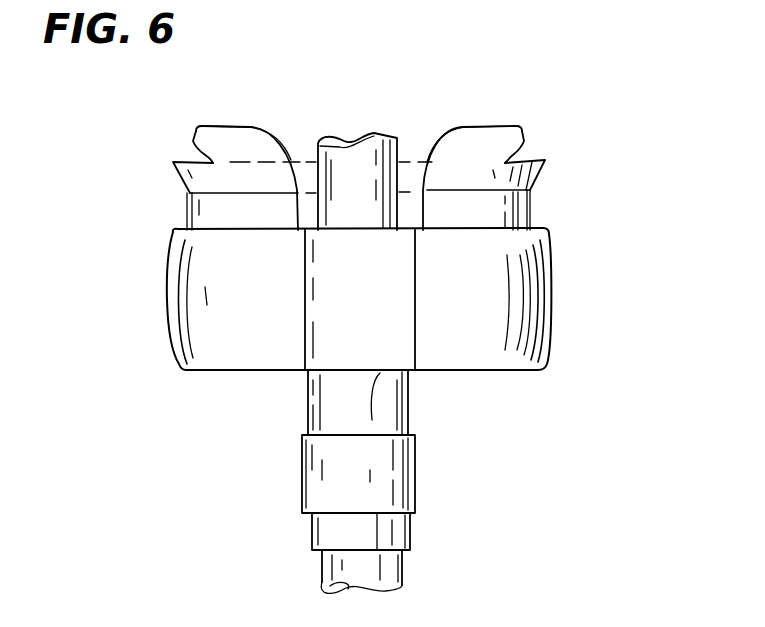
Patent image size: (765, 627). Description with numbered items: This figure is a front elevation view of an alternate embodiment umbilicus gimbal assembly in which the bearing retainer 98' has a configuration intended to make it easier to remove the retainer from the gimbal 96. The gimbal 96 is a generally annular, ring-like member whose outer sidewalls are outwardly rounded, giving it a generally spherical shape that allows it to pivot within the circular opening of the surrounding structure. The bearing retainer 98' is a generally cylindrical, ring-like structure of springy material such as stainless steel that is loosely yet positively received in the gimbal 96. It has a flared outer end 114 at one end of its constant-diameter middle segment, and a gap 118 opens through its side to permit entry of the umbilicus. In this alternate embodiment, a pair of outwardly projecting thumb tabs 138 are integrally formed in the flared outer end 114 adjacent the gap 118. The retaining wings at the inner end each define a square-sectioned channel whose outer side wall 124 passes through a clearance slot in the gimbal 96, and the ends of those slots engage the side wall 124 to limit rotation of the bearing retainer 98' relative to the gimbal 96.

The gimbal 96 is at (553, 303).
The bearing retainer 98' is at (576, 205).
The flared outer end 114 is at (180, 178).
The gap 118 is at (415, 316).
The outer side wall 124 is at (378, 141).
The thumb tabs 138 is at (216, 126).